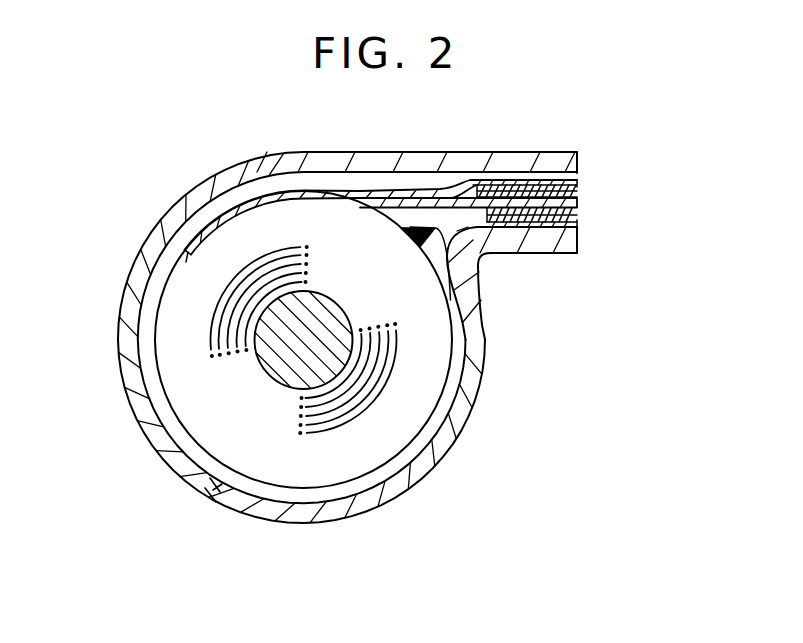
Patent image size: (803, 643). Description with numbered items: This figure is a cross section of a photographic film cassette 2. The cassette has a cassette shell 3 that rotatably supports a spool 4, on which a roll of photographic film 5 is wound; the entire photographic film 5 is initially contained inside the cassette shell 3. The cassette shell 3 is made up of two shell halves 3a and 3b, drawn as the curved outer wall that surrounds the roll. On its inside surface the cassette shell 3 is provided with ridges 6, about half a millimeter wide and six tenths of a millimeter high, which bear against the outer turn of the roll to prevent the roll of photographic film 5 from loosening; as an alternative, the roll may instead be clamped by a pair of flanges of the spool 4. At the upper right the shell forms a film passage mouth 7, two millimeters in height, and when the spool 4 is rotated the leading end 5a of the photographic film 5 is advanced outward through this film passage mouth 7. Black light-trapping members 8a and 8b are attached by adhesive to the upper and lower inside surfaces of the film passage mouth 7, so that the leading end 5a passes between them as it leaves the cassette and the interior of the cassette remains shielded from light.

The photographic film cassette 2 is at (197, 170).
The cassette shell 3 is at (245, 594).
The shell half 3a is at (183, 470).
The shell half 3b is at (256, 518).
The spool 4 is at (318, 322).
The photographic film 5 is at (178, 305).
The leading end 5a is at (577, 205).
The ridges 6 is at (165, 410).
The film passage mouth 7 is at (612, 170).
The light-trapping member 8a is at (577, 183).
The light-trapping member 8b is at (577, 223).